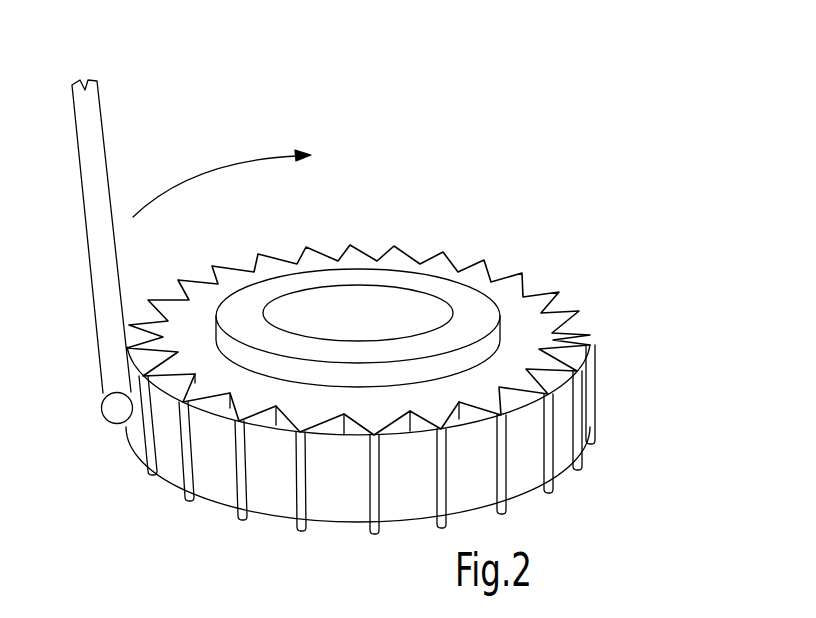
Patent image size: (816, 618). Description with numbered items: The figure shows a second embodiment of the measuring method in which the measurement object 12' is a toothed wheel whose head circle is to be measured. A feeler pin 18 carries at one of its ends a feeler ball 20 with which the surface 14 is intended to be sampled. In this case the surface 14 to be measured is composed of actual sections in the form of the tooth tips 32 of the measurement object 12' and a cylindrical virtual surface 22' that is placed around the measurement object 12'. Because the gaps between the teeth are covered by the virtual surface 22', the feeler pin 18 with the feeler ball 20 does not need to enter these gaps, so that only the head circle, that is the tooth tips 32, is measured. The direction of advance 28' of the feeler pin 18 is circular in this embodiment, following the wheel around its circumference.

The measurement object 12' is at (400, 256).
The surface 14 is at (429, 367).
The feeler pin 18 is at (92, 163).
The feeler ball 20 is at (113, 405).
The virtual surface 22' is at (429, 439).
The direction of advance 28' is at (222, 154).
The tooth tips 32 is at (297, 523).